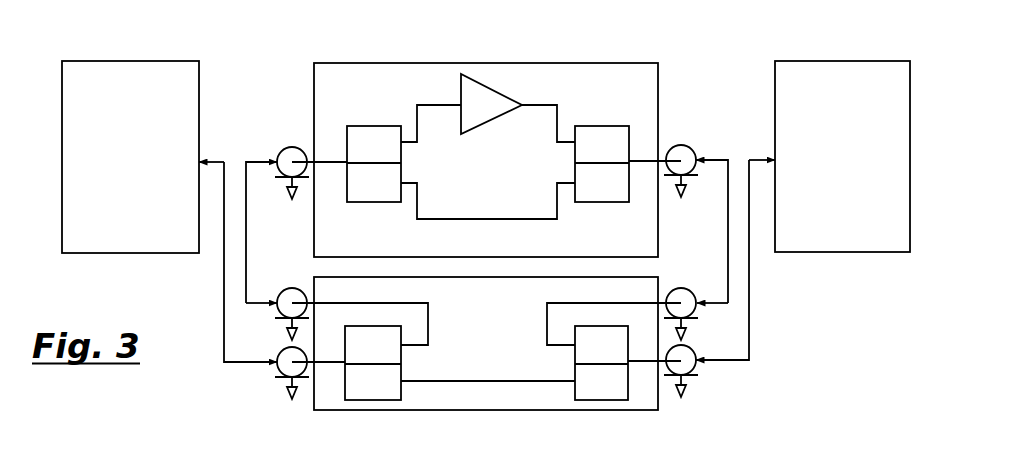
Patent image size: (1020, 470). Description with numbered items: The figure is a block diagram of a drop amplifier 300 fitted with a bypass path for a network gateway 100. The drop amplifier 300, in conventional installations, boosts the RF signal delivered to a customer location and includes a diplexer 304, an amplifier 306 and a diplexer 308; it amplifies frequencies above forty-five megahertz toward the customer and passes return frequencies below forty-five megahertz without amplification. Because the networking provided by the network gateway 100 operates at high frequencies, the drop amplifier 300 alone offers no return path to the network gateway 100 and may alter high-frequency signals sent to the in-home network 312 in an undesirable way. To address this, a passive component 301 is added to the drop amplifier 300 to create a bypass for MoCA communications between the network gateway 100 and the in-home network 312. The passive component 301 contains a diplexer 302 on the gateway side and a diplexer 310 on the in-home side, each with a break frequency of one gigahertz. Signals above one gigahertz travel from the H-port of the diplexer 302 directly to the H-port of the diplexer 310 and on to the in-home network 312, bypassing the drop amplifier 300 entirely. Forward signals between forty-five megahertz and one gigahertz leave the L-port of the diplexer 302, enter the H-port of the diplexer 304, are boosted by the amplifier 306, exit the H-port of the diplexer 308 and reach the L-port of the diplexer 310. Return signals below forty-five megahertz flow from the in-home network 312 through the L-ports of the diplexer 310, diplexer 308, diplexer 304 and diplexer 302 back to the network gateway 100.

The network gateway 100 is at (163, 60).
The drop amplifier 300 is at (556, 63).
The passive component 301 is at (493, 410).
The diplexer 302 is at (378, 400).
The diplexer 304 is at (383, 126).
The amplifier 306 is at (491, 104).
The diplexer 308 is at (618, 126).
The diplexer 310 is at (622, 400).
The in-home network 312 is at (864, 60).